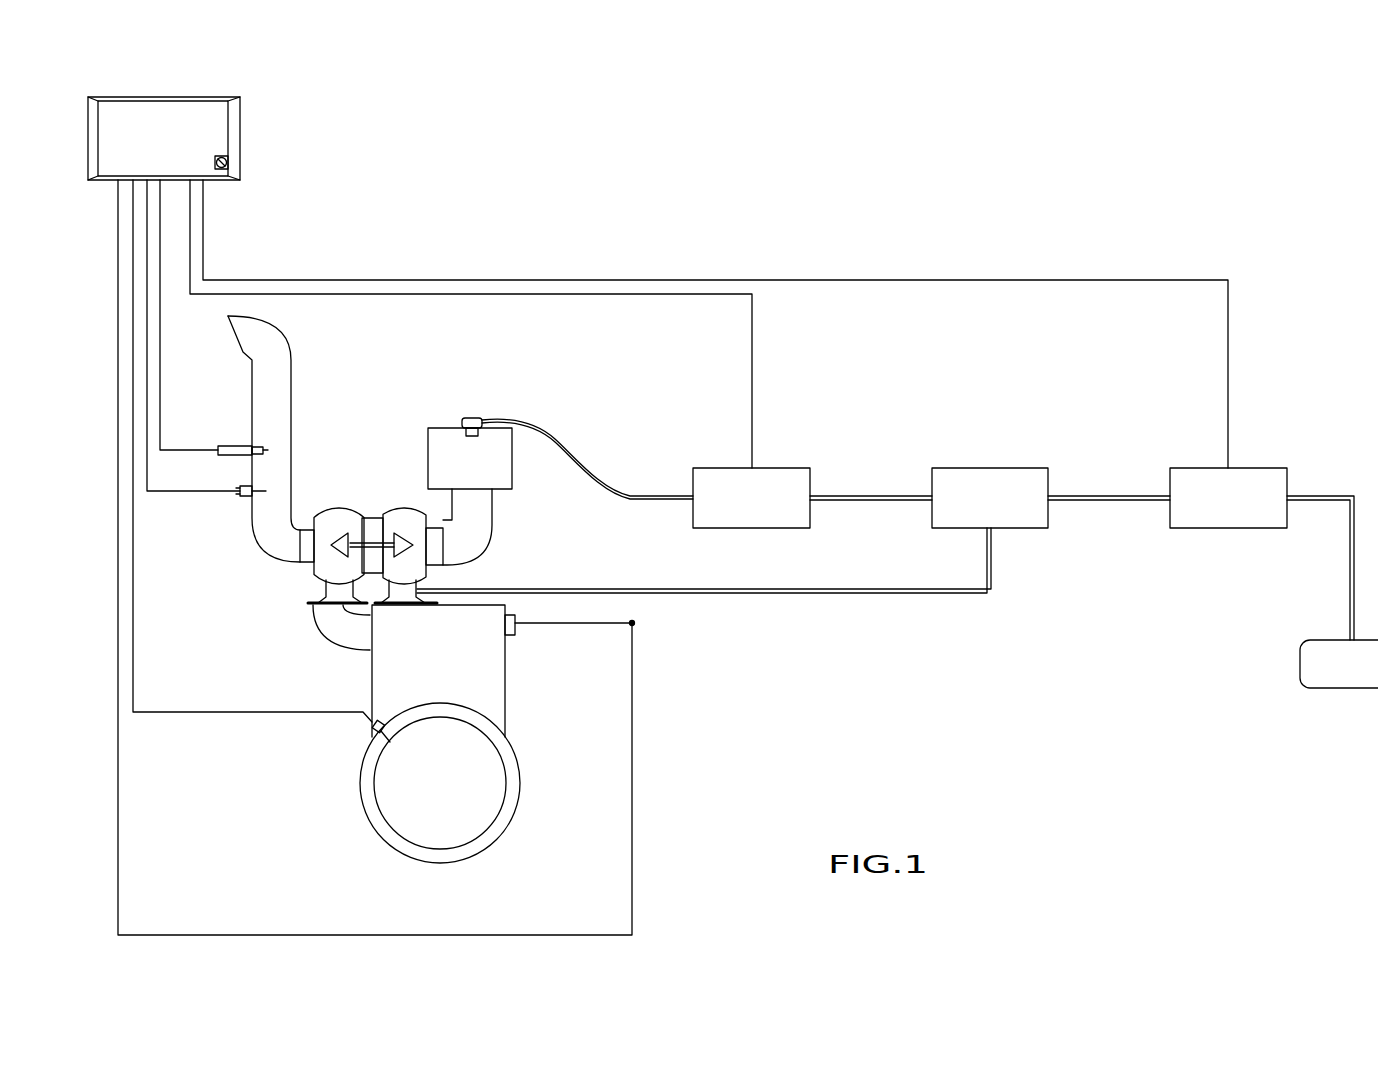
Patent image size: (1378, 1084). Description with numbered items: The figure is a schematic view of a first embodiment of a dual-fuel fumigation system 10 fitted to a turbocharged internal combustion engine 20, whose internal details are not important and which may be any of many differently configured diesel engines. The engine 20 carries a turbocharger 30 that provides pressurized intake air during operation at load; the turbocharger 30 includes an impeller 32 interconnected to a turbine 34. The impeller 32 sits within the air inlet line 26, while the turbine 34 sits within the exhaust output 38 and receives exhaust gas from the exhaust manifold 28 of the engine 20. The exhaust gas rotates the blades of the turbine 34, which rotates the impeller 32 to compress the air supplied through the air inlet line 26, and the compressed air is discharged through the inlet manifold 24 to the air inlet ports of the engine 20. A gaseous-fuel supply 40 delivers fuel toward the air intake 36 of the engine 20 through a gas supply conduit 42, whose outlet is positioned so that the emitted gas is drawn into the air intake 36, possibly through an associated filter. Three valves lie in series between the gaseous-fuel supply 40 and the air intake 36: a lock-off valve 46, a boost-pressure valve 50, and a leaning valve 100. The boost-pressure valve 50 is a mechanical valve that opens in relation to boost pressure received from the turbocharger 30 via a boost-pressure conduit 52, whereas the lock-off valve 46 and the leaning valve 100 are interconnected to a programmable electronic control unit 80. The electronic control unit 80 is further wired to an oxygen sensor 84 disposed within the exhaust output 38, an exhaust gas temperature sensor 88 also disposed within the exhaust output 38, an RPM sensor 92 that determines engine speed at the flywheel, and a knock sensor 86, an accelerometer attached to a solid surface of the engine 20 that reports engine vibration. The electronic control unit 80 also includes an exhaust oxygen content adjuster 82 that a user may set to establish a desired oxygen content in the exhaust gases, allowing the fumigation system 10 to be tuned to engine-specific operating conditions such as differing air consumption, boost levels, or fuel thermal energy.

The fumigation system 10 is at (720, 257).
The turbocharged internal combustion engine 20 is at (441, 733).
The inlet manifold 24 is at (445, 605).
The air inlet line 26 is at (482, 530).
The exhaust manifold 28 is at (340, 620).
The turbocharger 30 is at (361, 524).
The impeller 32 is at (410, 538).
The turbine 34 is at (336, 549).
The air intake 36 is at (440, 426).
The exhaust output 38 is at (267, 537).
The gaseous-fuel supply 40 is at (1298, 666).
The gas supply conduit 42 is at (584, 452).
The lock-off valve 46 is at (1230, 528).
The boost-pressure valve 50 is at (1015, 530).
The boost-pressure conduit 52 is at (805, 594).
The programmable electronic control unit 80 is at (148, 95).
The exhaust oxygen content adjuster 82 is at (230, 166).
The oxygen sensor 84 is at (235, 447).
The knock sensor 86 is at (516, 628).
The exhaust gas temperature sensor 88 is at (240, 491).
The RPM sensor 92 is at (370, 725).
The leaning valve 100 is at (794, 468).